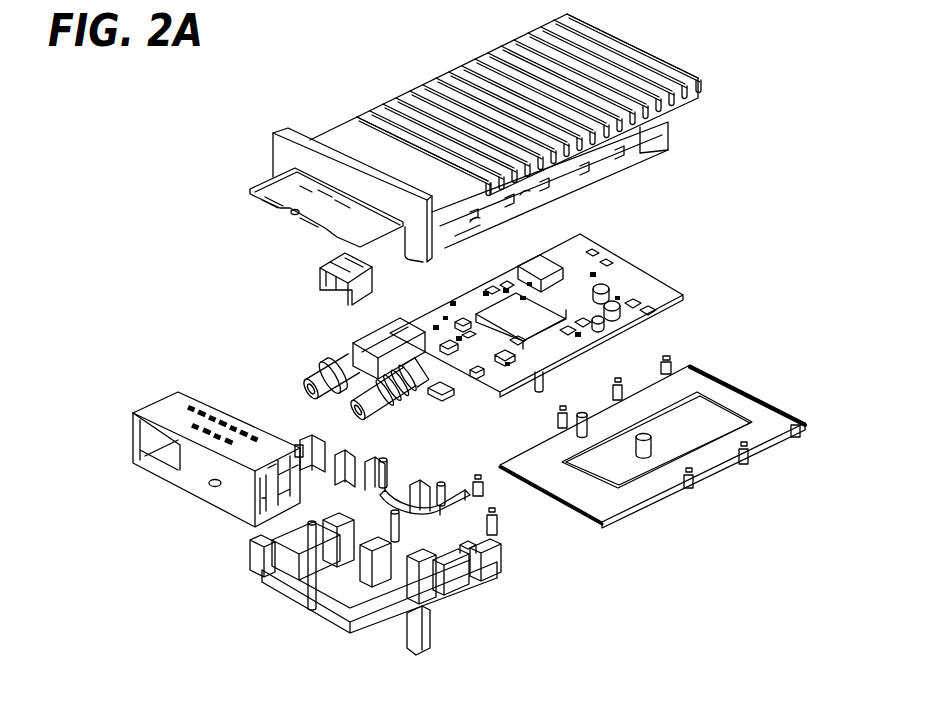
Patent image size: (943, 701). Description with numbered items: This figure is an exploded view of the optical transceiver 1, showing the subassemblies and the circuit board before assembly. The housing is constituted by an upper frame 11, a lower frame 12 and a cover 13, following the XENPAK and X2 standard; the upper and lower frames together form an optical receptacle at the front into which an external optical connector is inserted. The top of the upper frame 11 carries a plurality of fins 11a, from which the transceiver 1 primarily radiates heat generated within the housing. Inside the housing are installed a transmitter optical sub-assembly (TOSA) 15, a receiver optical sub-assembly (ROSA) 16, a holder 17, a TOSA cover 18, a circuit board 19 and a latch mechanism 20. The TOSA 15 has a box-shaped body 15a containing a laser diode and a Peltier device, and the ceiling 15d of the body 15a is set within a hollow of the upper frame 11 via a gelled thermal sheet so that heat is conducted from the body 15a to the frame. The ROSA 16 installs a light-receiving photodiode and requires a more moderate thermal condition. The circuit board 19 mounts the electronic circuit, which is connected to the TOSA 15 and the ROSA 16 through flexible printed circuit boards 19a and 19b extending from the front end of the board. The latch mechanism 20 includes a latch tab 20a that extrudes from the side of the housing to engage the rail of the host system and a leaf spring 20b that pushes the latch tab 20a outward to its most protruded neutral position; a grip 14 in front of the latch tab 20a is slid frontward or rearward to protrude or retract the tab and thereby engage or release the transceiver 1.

The transceiver 1 is at (790, 187).
The upper frame 11 is at (333, 125).
The fins 11a is at (458, 62).
The lower frame 12 is at (413, 633).
The cover 13 is at (762, 443).
The grip 14 is at (148, 412).
The transmitter optical sub-assembly 15 is at (350, 347).
The body 15a is at (397, 320).
The ceiling 15d is at (377, 337).
The receiver optical sub-assembly 16 is at (400, 410).
The holder 17 is at (444, 483).
The TOSA cover 18 is at (330, 297).
The circuit board 19 is at (623, 275).
The flexible printed circuit board 19a is at (460, 320).
The flexible printed circuit board 19b is at (461, 409).
The latch mechanism 20 is at (302, 440).
The latch tab 20a is at (437, 523).
The leaf spring 20b is at (440, 478).